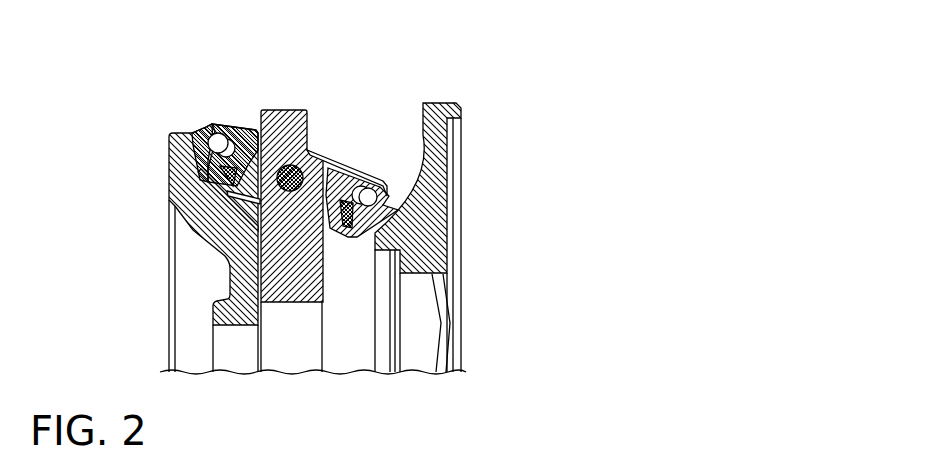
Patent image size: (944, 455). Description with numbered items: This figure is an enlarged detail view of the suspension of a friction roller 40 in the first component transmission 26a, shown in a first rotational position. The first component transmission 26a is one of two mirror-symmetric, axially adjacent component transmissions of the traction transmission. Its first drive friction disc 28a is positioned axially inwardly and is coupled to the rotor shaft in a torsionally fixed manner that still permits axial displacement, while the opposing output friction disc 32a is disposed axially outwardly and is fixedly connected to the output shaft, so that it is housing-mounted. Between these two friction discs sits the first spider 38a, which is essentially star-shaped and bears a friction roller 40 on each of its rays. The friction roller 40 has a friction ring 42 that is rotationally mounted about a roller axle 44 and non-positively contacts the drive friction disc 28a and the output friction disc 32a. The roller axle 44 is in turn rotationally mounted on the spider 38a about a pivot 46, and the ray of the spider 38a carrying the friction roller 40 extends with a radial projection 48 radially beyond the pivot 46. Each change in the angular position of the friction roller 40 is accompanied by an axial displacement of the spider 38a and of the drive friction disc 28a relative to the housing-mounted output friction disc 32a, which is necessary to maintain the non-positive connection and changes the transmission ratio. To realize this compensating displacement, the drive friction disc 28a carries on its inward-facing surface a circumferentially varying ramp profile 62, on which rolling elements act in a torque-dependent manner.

The first component transmission 26a is at (495, 92).
The first drive friction disc 28a is at (422, 207).
The output friction disc 32a is at (196, 213).
The first spider 38a is at (288, 263).
The friction roller 40 is at (333, 138).
The friction ring 42 is at (200, 155).
The roller axle 44 is at (242, 142).
The pivot 46 is at (287, 178).
The radial projection 48 is at (292, 125).
The ramp profile 62 is at (450, 323).